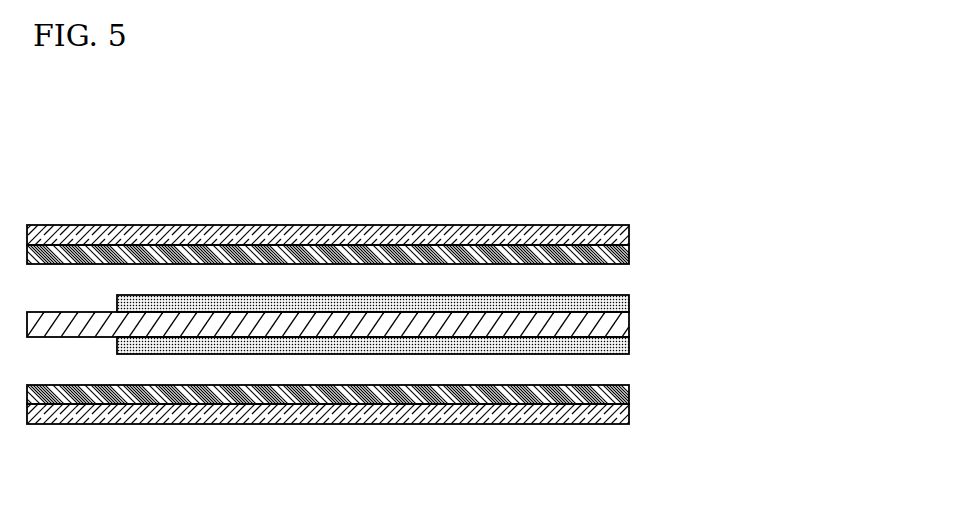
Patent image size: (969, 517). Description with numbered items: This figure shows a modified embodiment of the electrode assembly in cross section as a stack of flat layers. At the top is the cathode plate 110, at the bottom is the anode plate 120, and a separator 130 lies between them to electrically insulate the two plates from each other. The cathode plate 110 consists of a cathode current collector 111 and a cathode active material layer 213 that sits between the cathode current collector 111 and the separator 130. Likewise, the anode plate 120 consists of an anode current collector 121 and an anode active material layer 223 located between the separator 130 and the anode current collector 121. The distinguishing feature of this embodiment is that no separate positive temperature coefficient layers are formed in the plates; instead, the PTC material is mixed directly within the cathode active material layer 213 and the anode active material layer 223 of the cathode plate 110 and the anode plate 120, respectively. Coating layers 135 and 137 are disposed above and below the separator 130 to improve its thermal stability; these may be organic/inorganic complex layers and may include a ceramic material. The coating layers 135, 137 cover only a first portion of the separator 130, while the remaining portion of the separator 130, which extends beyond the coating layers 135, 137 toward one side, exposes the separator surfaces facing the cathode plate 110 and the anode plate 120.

The cathode plate 110 is at (397, 222).
The cathode current collector 111 is at (629, 233).
The cathode active material layer 213 is at (372, 250).
The coating layer 135 is at (629, 302).
The separator 130 is at (629, 324).
The coating layer 137 is at (629, 347).
The anode plate 120 is at (397, 435).
The anode active material layer 223 is at (629, 391).
The anode current collector 121 is at (718, 393).